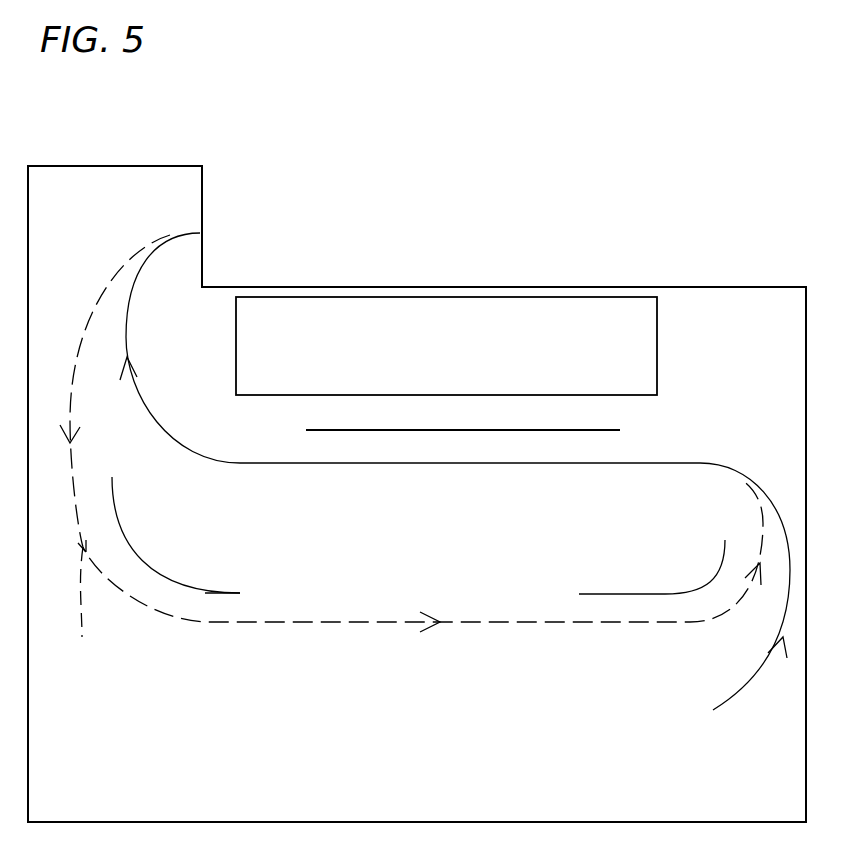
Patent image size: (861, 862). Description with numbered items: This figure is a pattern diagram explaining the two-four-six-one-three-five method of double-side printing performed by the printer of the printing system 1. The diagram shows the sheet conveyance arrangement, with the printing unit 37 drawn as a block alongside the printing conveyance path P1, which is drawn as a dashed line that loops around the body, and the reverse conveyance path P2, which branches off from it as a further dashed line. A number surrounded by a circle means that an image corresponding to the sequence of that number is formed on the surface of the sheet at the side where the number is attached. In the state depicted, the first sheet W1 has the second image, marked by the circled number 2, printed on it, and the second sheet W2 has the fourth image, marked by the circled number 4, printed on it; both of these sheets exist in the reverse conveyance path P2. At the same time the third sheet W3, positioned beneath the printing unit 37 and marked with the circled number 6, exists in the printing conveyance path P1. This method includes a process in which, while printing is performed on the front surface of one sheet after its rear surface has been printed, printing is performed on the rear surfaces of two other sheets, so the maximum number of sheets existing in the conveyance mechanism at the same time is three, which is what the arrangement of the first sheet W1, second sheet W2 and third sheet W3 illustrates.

The printing system 1 is at (462, 170).
The printing unit 37 is at (591, 316).
The sixth image 6 is at (463, 416).
The fourth image 4 is at (176, 535).
The second image 2 is at (682, 567).
The third sheet W3 is at (322, 430).
The second sheet W2 is at (228, 597).
The first sheet W1 is at (610, 597).
The printing conveyance path P1 is at (776, 512).
The reverse conveyance path P2 is at (83, 606).